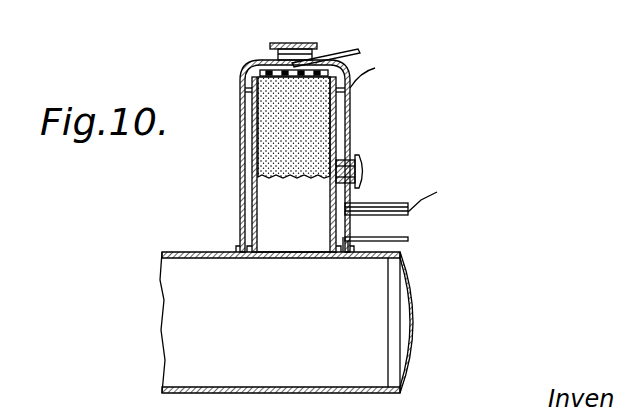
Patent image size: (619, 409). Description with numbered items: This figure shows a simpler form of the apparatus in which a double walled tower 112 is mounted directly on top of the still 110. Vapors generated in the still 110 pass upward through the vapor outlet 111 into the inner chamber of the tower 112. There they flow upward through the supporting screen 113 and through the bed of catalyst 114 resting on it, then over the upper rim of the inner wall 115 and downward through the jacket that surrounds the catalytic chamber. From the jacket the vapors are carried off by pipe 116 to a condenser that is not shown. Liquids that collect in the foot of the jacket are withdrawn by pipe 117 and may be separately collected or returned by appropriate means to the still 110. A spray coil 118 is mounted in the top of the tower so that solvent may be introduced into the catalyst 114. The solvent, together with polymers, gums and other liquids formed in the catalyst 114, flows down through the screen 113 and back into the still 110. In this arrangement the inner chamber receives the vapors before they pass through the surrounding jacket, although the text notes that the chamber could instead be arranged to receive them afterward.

The still 110 is at (286, 322).
The vapor outlet 111 is at (297, 252).
The double walled tower 112 is at (352, 112).
The supporting screen 113 is at (282, 163).
The catalyst 114 is at (297, 130).
The inner wall 115 is at (336, 131).
The pipe 116 is at (385, 205).
The pipe 117 is at (388, 240).
The spray coil 118 is at (295, 74).